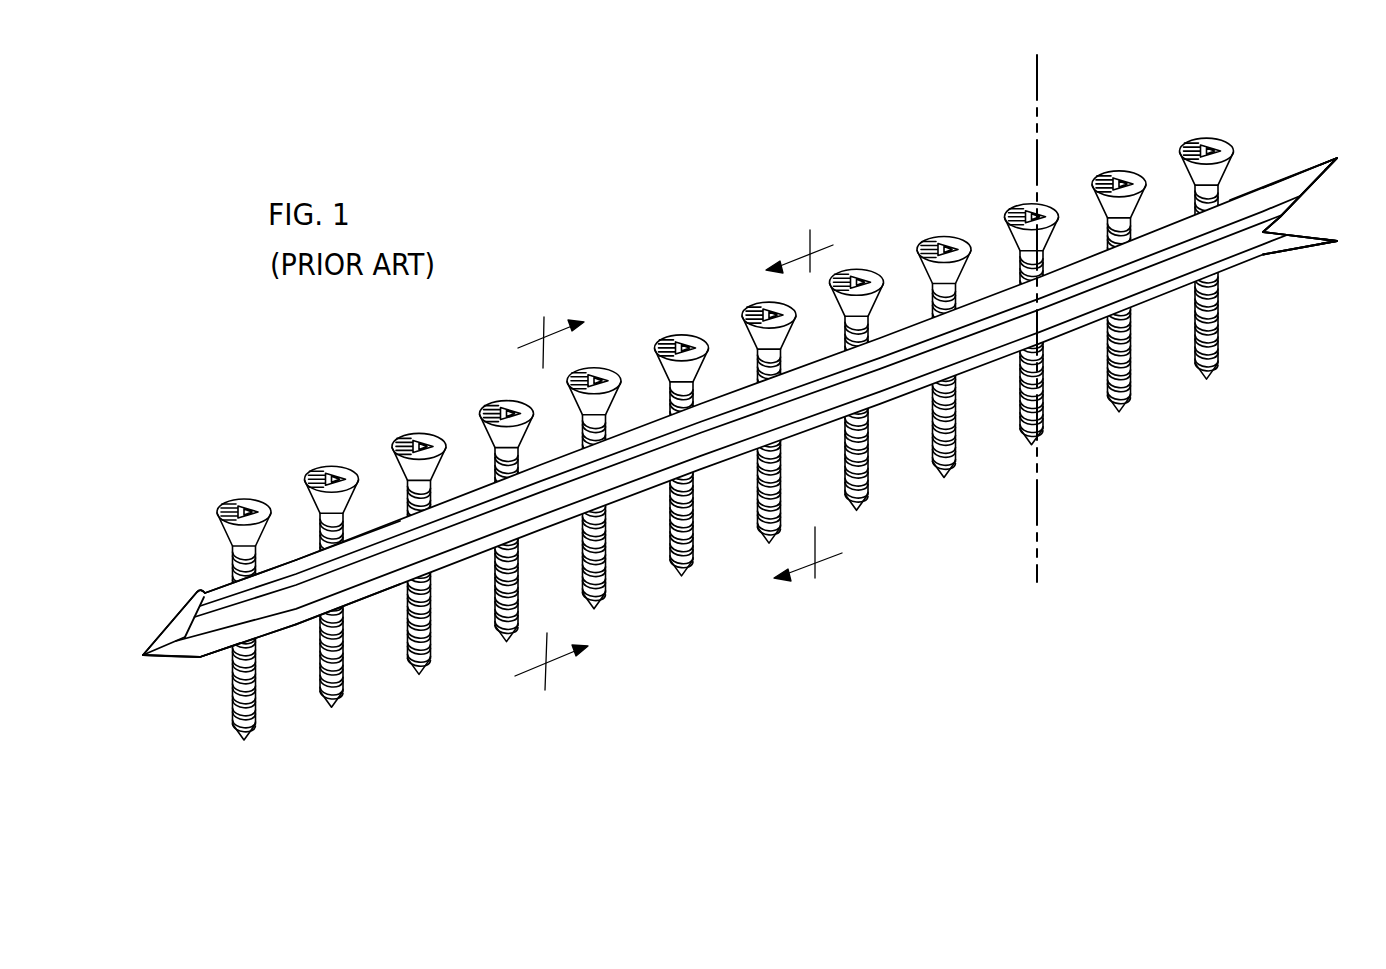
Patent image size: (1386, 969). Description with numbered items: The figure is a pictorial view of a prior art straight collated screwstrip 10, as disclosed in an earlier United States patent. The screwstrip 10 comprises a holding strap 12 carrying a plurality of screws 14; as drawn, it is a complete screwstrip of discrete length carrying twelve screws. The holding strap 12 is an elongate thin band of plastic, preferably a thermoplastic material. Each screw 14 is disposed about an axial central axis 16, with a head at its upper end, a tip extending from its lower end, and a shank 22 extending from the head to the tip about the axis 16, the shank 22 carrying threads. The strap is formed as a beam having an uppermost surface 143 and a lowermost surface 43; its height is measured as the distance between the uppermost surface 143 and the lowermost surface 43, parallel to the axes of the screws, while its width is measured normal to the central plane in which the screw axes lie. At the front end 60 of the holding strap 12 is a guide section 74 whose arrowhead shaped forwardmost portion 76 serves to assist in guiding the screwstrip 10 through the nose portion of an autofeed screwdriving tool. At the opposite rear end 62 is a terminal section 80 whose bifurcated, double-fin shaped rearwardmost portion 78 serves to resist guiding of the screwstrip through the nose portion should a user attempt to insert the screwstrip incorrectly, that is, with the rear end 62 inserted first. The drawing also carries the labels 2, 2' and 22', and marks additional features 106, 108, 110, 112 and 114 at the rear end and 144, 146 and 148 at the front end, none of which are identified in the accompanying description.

The collated screwstrip 10 is at (644, 270).
The holding strap 12 is at (619, 487).
The screw 14 is at (253, 500).
The axial central axis 16 is at (1052, 82).
The section line 2 is at (548, 339).
The section line 2' is at (550, 670).
The shank 22 is at (802, 246).
The section line 22' is at (816, 560).
The lowermost surface 43 is at (217, 660).
The front end 60 is at (125, 648).
The rear end 62 is at (1335, 180).
The guide section 74 is at (222, 531).
The arrowhead shaped forwardmost portion 76 is at (203, 713).
The bifurcated, double-fin shaped rearwardmost portion 78 is at (1343, 276).
The terminal section 80 is at (1333, 65).
The notch of trailing end 106 is at (1310, 220).
The upper prong 108 is at (1295, 187).
The lower prong 110 is at (1293, 249).
The upper prong tip 112 is at (1337, 157).
The lower prong tip 114 is at (1338, 241).
The uppermost surface 143 is at (302, 562).
The upper edge of leading end 144 is at (187, 607).
The point of leading end 146 is at (141, 660).
The lower edge of leading end 148 is at (178, 660).